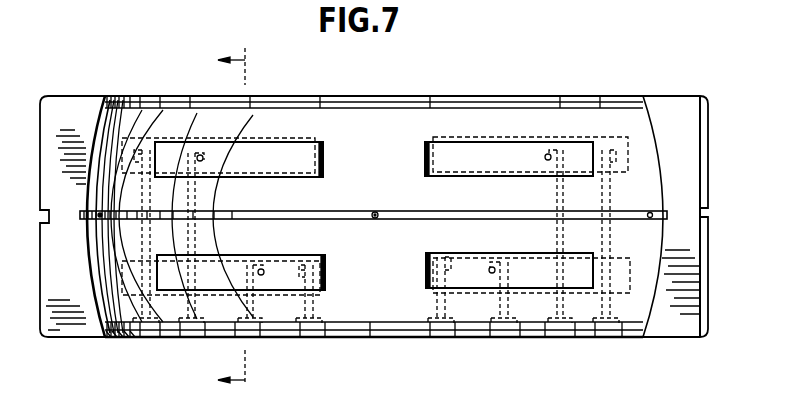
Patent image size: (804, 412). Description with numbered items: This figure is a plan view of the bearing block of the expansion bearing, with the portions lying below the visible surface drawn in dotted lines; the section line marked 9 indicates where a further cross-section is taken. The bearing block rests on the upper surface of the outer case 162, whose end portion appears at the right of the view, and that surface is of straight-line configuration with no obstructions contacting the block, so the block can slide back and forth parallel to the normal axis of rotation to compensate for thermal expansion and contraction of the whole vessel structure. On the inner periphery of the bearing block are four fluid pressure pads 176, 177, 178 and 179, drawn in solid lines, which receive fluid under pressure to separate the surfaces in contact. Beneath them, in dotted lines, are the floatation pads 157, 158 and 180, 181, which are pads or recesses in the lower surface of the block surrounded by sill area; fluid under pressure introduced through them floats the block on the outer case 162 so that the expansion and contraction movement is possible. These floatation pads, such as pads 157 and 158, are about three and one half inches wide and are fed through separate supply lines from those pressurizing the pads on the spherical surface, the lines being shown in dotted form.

The section line 9- 9 is at (242, 218).
The bearing pad 157 is at (295, 138).
The bearing pad 158 is at (300, 295).
The outer case 162 is at (663, 108).
The fluid pressure pad 176 is at (324, 162).
The fluid pressure pad 177 is at (426, 172).
The fluid pressure pad 178 is at (326, 268).
The fluid pressure pad 179 is at (426, 268).
The fluid pressure pad 180 is at (620, 134).
The fluid pressure pad 181 is at (630, 270).